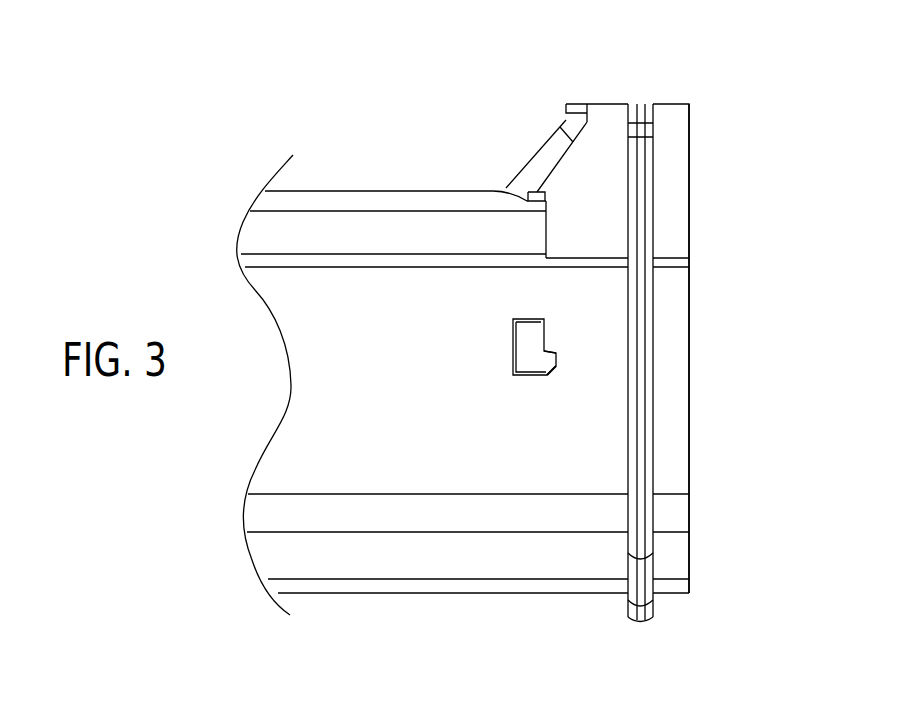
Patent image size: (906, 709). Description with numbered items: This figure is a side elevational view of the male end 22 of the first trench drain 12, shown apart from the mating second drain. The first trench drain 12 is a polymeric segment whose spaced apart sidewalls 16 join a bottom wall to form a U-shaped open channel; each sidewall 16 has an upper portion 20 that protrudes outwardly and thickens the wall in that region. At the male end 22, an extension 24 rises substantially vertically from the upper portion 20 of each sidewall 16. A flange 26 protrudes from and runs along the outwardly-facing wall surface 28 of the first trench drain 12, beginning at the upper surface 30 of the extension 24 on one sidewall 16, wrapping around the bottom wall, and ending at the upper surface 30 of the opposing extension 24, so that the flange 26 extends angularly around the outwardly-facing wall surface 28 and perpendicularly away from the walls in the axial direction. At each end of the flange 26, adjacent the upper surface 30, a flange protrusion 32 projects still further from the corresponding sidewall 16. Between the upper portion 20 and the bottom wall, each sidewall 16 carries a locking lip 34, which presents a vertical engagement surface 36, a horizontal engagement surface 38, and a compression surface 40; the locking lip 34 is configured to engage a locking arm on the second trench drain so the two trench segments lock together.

The first trench drain 12 is at (732, 160).
The sidewall 16 is at (328, 453).
The upper portion 20 is at (267, 230).
The male end 22 is at (653, 78).
The extension 24 is at (577, 128).
The flange 26 is at (642, 595).
The outwardly-facing wall surface 28 is at (548, 513).
The upper surface 30 is at (672, 104).
The flange protrusion 32 is at (642, 112).
The locking lip 34 is at (593, 359).
The vertical engagement surface 36 is at (547, 332).
The horizontal engagement surface 38 is at (550, 350).
The compression surface 40 is at (553, 368).